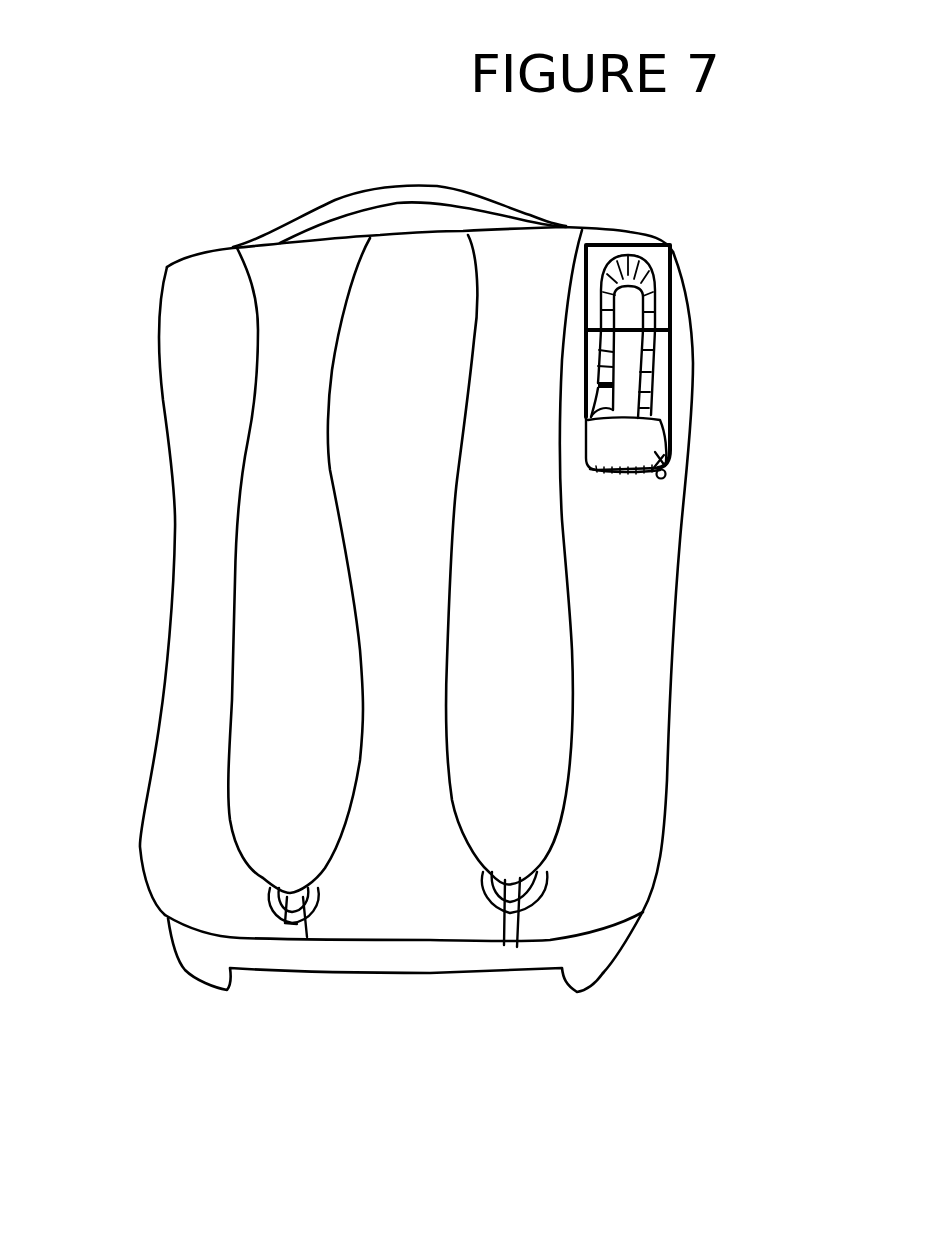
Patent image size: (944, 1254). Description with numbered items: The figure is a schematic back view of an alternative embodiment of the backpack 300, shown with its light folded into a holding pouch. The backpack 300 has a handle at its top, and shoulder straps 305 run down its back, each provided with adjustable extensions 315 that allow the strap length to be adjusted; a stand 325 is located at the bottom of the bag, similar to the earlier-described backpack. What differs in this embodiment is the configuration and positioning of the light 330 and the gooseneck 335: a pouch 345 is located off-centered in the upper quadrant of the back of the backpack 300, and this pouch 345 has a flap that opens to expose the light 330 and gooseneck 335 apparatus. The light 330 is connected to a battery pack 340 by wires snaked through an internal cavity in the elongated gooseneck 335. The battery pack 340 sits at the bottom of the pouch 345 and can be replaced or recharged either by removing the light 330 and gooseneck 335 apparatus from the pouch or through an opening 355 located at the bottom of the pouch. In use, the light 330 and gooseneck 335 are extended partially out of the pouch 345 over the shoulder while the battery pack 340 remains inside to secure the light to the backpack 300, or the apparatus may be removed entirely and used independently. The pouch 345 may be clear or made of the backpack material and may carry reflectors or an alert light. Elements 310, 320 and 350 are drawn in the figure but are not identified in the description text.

The backpack 300 is at (200, 120).
The straps 305 is at (262, 695).
The carry handle 310 is at (370, 203).
The adjustable extensions 315 is at (299, 930).
The bottom seam / lower panel 320 is at (405, 887).
The stand 325 is at (602, 957).
The light 330 is at (598, 415).
The gooseneck 335 is at (660, 360).
The battery pack 340 is at (662, 465).
The pouch 345 is at (660, 250).
The pocket pouch 350 is at (590, 474).
The opening 355 is at (627, 473).